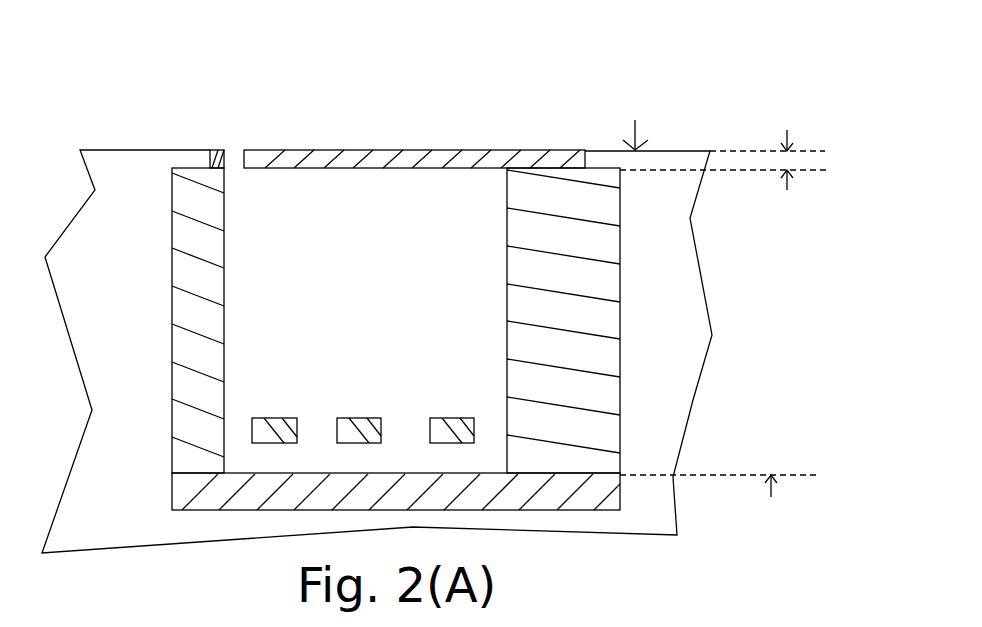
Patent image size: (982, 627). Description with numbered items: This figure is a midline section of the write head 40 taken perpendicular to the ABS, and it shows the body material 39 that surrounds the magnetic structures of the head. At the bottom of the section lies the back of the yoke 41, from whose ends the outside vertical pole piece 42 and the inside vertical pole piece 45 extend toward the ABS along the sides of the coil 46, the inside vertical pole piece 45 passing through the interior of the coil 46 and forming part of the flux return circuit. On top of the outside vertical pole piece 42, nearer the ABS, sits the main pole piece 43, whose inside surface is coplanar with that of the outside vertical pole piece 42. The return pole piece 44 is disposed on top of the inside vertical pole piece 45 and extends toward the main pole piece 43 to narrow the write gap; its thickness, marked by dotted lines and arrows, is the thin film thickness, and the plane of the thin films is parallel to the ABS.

The body material 39 is at (668, 390).
The write head 40 is at (527, 110).
The back of the yoke 41 is at (200, 496).
The outside vertical pole piece 42 is at (192, 314).
The main pole piece 43 is at (215, 150).
The return pole piece 44 is at (378, 158).
The inside vertical pole piece 45 is at (578, 280).
The coil 46 is at (428, 418).